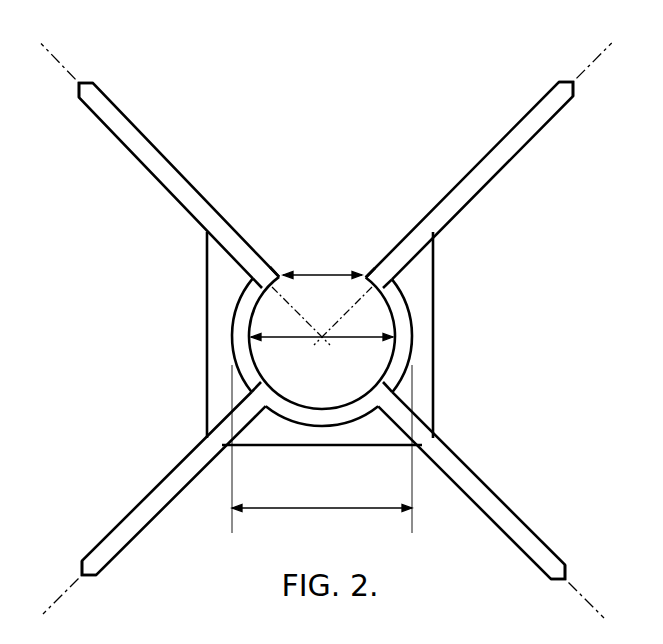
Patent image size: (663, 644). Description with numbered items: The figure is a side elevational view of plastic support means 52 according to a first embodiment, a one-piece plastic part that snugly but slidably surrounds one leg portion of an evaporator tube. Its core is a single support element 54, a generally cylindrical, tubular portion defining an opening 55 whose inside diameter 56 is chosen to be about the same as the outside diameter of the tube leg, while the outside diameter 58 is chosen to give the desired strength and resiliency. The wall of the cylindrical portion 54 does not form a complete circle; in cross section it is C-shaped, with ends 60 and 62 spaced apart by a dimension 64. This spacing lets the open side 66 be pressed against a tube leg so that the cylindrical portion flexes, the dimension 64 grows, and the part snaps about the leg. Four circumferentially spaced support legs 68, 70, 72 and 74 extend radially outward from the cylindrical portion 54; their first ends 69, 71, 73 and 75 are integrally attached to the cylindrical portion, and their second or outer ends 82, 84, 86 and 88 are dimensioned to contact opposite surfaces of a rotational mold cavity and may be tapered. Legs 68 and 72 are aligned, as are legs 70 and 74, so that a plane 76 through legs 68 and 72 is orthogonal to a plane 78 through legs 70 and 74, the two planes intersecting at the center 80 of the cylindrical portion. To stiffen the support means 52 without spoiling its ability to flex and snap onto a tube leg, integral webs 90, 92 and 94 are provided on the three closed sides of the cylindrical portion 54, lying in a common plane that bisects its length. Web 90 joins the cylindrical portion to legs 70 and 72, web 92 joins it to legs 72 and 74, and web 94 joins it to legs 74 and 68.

The plastic support means 52 is at (288, 351).
The support element 54 is at (413, 336).
The opening 55 is at (265, 322).
The inside diameter 56 is at (358, 341).
The outside diameter 58 is at (292, 506).
The end of C-shaped configuration 60 is at (279, 276).
The end of C-shaped configuration 62 is at (366, 276).
The dimension 64 is at (320, 270).
The open side 66 is at (345, 218).
The support leg 68 is at (179, 164).
The first end 69 is at (243, 277).
The support leg 70 is at (497, 179).
The first end 71 is at (402, 276).
The support leg 72 is at (502, 490).
The first end 73 is at (403, 393).
The support leg 74 is at (142, 487).
The first end 75 is at (242, 396).
The plane 76 is at (53, 66).
The plane 78 is at (594, 66).
The center of cylindrical portion 80 is at (321, 342).
The second end 82 is at (81, 84).
The second end 84 is at (574, 84).
The second end 86 is at (566, 580).
The second end 88 is at (82, 576).
The web 90 is at (424, 301).
The web 92 is at (337, 438).
The web 94 is at (216, 298).